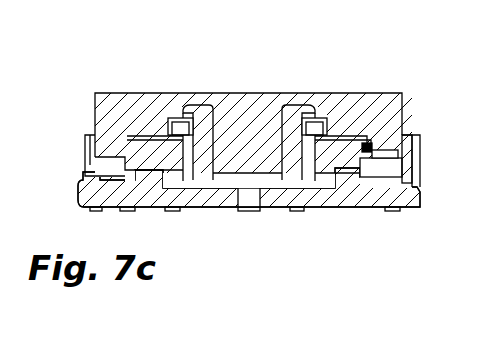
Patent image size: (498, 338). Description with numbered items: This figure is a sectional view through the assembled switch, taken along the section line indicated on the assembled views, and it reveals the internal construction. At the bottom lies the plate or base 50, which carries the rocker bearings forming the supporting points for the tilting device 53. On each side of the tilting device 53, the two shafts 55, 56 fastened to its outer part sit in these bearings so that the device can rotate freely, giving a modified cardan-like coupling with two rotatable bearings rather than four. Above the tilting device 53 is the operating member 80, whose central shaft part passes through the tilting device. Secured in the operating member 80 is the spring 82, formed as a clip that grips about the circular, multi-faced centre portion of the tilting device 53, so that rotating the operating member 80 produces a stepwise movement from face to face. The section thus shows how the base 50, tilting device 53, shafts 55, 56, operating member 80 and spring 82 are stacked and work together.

The base 50 is at (352, 195).
The tilting device 53 is at (314, 130).
The shaft 55 is at (145, 160).
The shaft 56 is at (368, 148).
The operating member 80 is at (258, 120).
The spring 82 is at (178, 120).